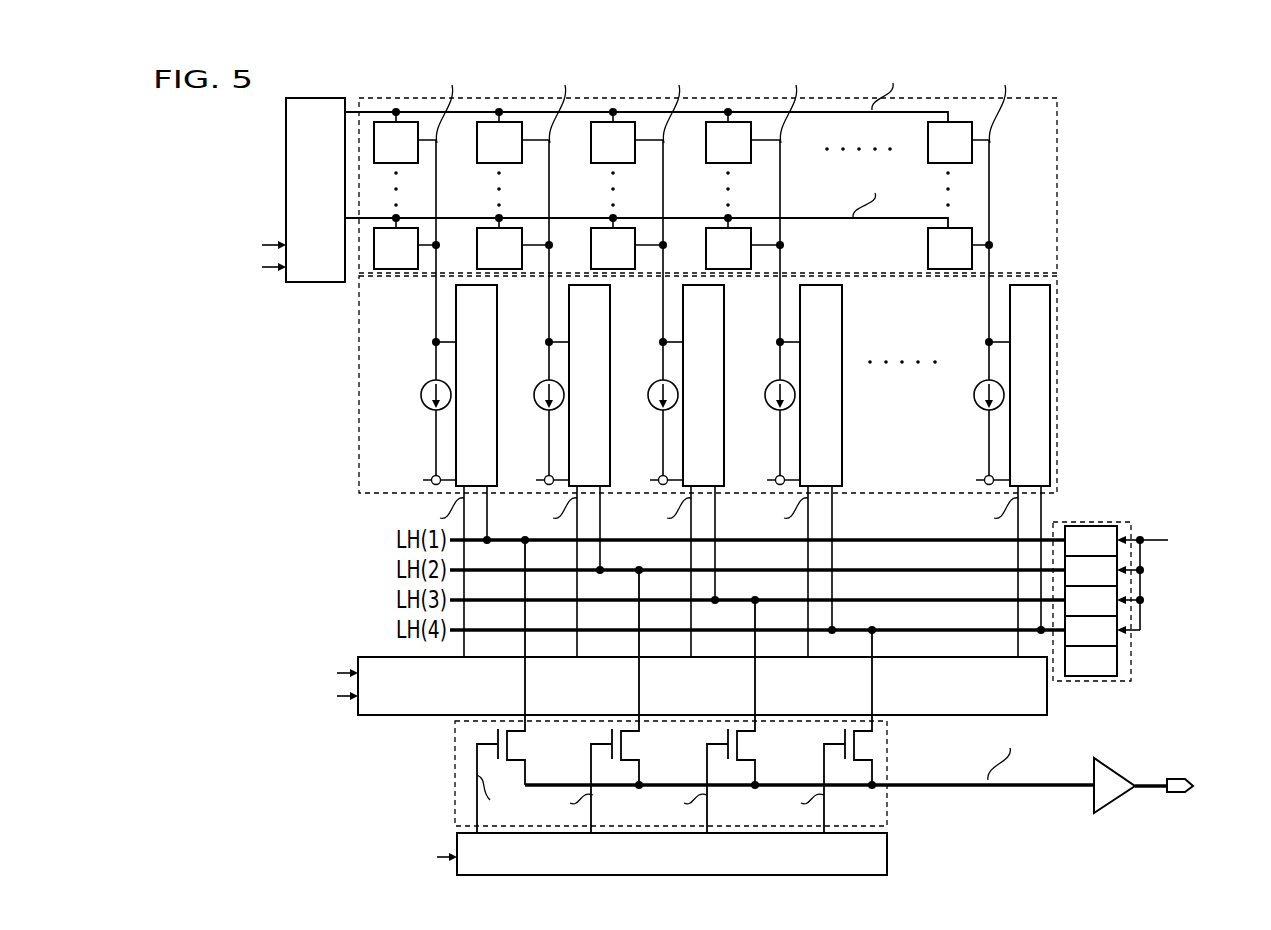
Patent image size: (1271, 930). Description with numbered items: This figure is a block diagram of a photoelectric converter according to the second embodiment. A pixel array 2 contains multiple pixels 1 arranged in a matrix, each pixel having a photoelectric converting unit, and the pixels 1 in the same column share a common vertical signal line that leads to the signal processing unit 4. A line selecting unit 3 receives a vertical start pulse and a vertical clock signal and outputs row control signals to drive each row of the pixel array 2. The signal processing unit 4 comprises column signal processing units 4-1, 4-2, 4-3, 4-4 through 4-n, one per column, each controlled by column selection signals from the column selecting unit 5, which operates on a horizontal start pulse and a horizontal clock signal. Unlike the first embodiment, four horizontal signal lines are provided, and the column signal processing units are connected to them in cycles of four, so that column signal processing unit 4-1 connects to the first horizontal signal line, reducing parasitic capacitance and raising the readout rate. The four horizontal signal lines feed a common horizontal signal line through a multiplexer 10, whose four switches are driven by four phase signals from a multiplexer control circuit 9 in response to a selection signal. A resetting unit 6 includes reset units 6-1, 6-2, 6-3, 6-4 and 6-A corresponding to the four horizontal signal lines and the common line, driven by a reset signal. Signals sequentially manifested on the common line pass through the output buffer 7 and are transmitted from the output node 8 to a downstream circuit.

The pixel 1 is at (673, 195).
The pixel array 2 is at (1057, 200).
The line selecting unit 3 is at (323, 197).
The signal processing unit 4 is at (359, 340).
The column signal processing unit 4-1 is at (492, 382).
The column signal processing unit 4-2 is at (605, 382).
The column signal processing unit 4-3 is at (719, 382).
The column signal processing unit 4-4 is at (836, 382).
The column signal processing unit 4-n is at (1046, 382).
The column selecting unit 5 is at (701, 700).
The resetting unit 6 is at (1105, 522).
The reset unit 6-1 is at (1108, 553).
The reset unit 6-2 is at (1108, 583).
The reset unit 6-3 is at (1108, 613).
The reset unit 6-4 is at (1108, 643).
The reset unit 6-A is at (1108, 673).
The output buffer 7 is at (1118, 768).
The output node 8 is at (1190, 780).
The multiplexer control circuit 9 is at (679, 868).
The multiplexer 10 is at (455, 742).